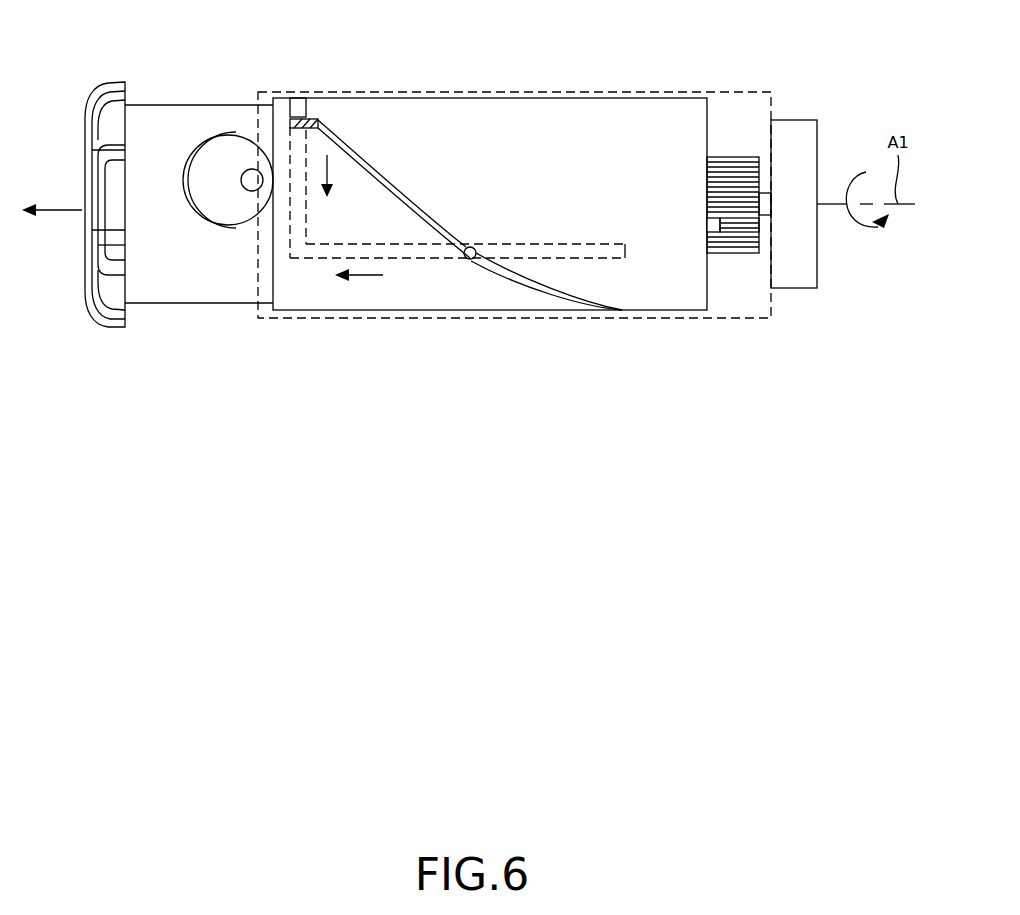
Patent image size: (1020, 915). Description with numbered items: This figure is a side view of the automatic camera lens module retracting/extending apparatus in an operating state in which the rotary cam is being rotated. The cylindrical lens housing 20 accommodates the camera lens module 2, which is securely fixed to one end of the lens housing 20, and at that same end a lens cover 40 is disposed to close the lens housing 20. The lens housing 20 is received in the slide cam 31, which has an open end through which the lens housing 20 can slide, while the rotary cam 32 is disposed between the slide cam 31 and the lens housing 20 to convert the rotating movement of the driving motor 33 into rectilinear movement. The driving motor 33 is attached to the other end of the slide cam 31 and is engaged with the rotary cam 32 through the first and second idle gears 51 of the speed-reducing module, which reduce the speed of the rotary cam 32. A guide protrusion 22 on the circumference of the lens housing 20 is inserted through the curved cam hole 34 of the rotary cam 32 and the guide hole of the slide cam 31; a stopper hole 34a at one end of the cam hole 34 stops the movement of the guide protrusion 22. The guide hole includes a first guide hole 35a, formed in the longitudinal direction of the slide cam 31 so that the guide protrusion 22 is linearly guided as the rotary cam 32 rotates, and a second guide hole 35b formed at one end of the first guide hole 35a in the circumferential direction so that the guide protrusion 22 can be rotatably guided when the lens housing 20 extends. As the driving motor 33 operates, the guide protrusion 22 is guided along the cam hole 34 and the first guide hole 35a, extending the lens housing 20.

The camera lens module 2 is at (231, 120).
The lens housing 20 is at (157, 104).
The guide protrusion 22 is at (463, 261).
The slide cam 31 is at (463, 91).
The rotary cam 32 is at (551, 96).
The driving motor 33 is at (797, 118).
The cam hole 34 is at (546, 294).
The stopper hole 34a is at (316, 118).
The first guide hole 35a is at (328, 259).
The second guide hole 35b is at (297, 207).
The lens cover 40 is at (105, 328).
The first and second idle gears 51 is at (732, 255).